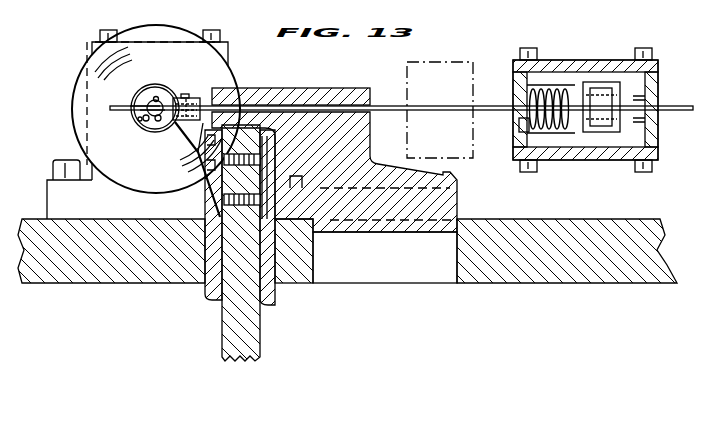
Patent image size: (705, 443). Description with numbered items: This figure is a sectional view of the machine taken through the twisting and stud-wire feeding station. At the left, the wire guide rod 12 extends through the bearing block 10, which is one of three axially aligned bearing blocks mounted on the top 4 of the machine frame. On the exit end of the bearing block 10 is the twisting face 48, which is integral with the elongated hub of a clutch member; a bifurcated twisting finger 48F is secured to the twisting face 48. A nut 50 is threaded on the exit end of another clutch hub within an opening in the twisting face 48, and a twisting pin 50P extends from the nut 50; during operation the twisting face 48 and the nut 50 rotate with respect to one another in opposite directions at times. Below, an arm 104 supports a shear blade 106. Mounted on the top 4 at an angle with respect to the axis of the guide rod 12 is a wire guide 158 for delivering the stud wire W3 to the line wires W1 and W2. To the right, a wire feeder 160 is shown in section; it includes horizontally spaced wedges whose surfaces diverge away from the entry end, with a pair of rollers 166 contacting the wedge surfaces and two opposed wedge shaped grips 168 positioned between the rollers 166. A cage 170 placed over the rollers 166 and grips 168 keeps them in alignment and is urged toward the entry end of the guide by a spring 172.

The top 4 is at (97, 219).
The bearing block 10 is at (92, 40).
The wire guide rod 12 is at (148, 104).
The twisting face 48 is at (85, 85).
The bifurcated twisting finger 48F is at (186, 124).
The nut 50 is at (175, 96).
The twisting pin 50P is at (140, 121).
The arm 104 is at (222, 331).
The shear blade 106 is at (168, 168).
The wire guide 158 is at (314, 88).
The wire feeder 160 is at (509, 51).
The rollers 166 is at (612, 60).
The wedge shaped grips 168 is at (642, 97).
The cage 170 is at (584, 80).
The spring 172 is at (520, 128).
The line wire W1 is at (157, 96).
The line wire W2 is at (153, 126).
The stud wire W3 is at (447, 106).